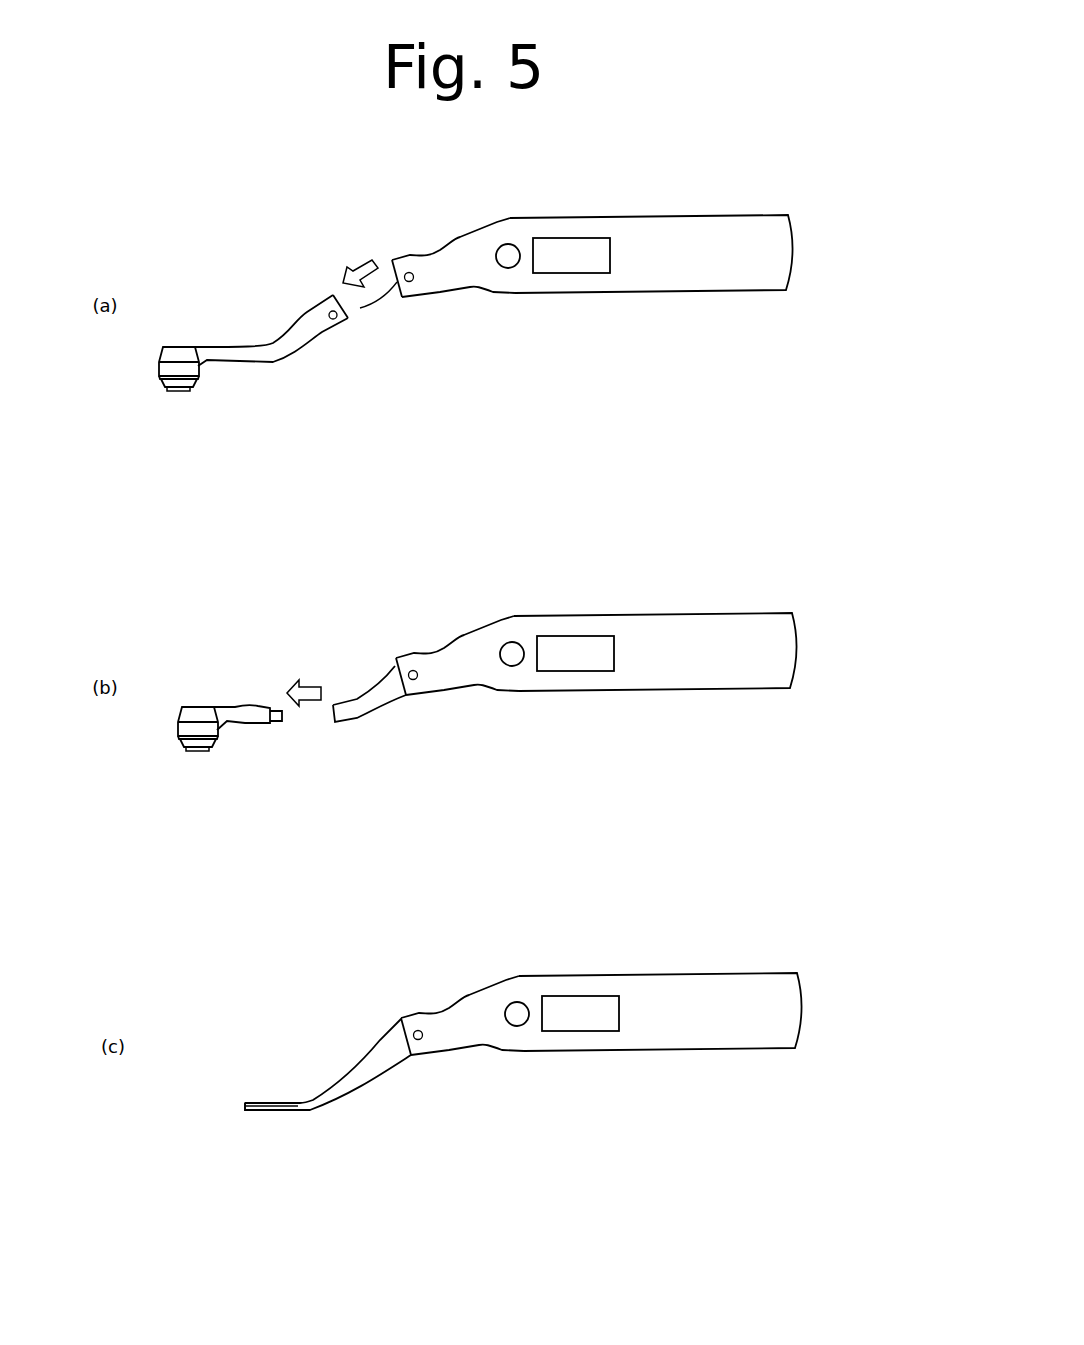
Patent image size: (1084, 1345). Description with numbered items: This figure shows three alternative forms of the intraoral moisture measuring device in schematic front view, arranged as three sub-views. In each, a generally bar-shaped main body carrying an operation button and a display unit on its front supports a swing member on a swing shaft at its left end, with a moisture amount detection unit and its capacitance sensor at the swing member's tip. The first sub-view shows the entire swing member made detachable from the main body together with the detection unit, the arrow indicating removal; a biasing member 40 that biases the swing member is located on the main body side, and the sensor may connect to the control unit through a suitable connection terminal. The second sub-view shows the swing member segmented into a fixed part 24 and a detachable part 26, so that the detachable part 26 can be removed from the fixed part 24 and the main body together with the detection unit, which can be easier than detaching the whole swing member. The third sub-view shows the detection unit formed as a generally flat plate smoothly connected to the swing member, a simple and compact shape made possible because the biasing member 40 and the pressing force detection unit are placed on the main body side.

The fixed part 24 is at (360, 705).
The detachable part 26 is at (248, 716).
The biasing member 40 is at (383, 300).